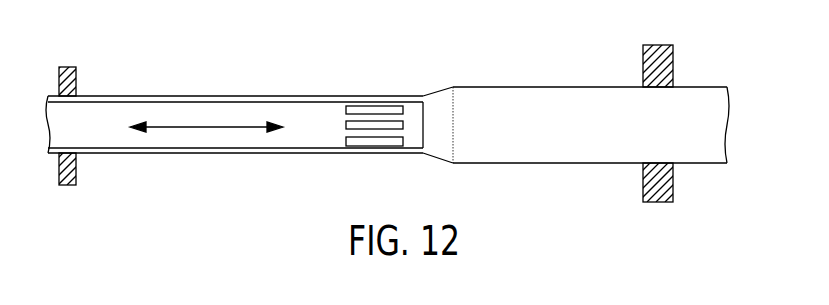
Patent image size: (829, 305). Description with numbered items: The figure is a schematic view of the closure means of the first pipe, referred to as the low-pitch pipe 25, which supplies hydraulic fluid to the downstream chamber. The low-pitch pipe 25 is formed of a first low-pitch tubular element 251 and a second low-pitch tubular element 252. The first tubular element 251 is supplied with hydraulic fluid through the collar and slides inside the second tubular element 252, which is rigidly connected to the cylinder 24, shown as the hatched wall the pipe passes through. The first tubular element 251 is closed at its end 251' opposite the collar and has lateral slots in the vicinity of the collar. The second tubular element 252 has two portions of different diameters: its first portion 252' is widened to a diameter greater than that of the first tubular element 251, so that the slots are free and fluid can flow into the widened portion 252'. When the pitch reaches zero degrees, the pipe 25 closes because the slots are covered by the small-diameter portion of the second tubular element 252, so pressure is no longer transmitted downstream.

The cylinder 24 is at (77, 163).
The low-pitch pipe 25 is at (387, 139).
The first low-pitch tubular element 251 is at (235, 163).
The end of the first tubular element 251' is at (454, 156).
The second low-pitch tubular element 252 is at (590, 155).
The first portion of the second tubular element 252' is at (494, 86).